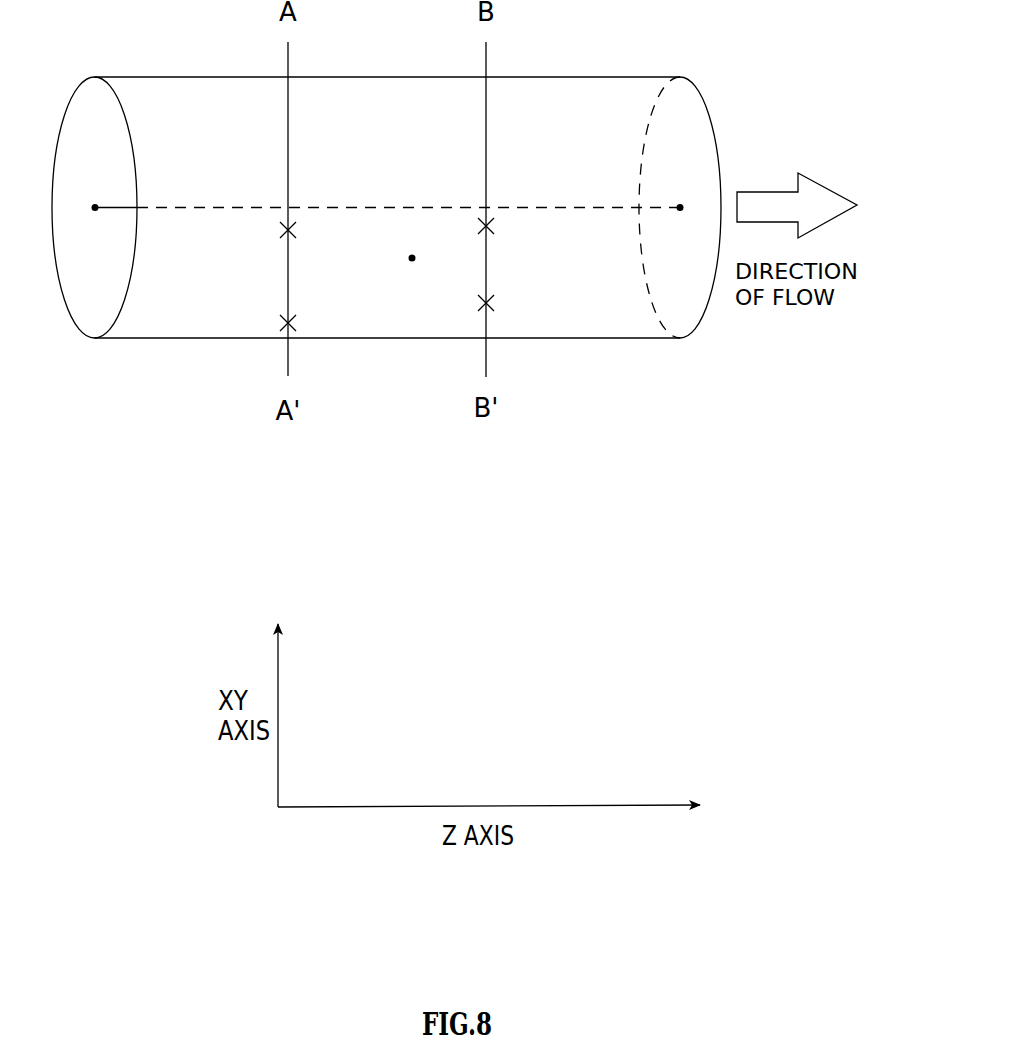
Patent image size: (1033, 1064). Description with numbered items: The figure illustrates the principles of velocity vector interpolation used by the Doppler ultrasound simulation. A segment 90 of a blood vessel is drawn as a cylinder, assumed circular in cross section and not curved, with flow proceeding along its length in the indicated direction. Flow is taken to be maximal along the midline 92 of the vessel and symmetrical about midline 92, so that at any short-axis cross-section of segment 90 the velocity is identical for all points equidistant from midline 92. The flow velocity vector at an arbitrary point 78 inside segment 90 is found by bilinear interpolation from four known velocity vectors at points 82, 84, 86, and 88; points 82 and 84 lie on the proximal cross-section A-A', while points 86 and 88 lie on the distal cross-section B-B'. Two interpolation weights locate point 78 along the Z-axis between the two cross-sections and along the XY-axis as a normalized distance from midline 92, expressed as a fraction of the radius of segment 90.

The point 78 is at (411, 266).
The velocity sample point 82 is at (277, 246).
The velocity sample point 84 is at (277, 333).
The velocity sample point 86 is at (499, 322).
The velocity sample point 88 is at (500, 245).
The segment of a blood vessel 90 is at (357, 344).
The midline 92 is at (122, 216).